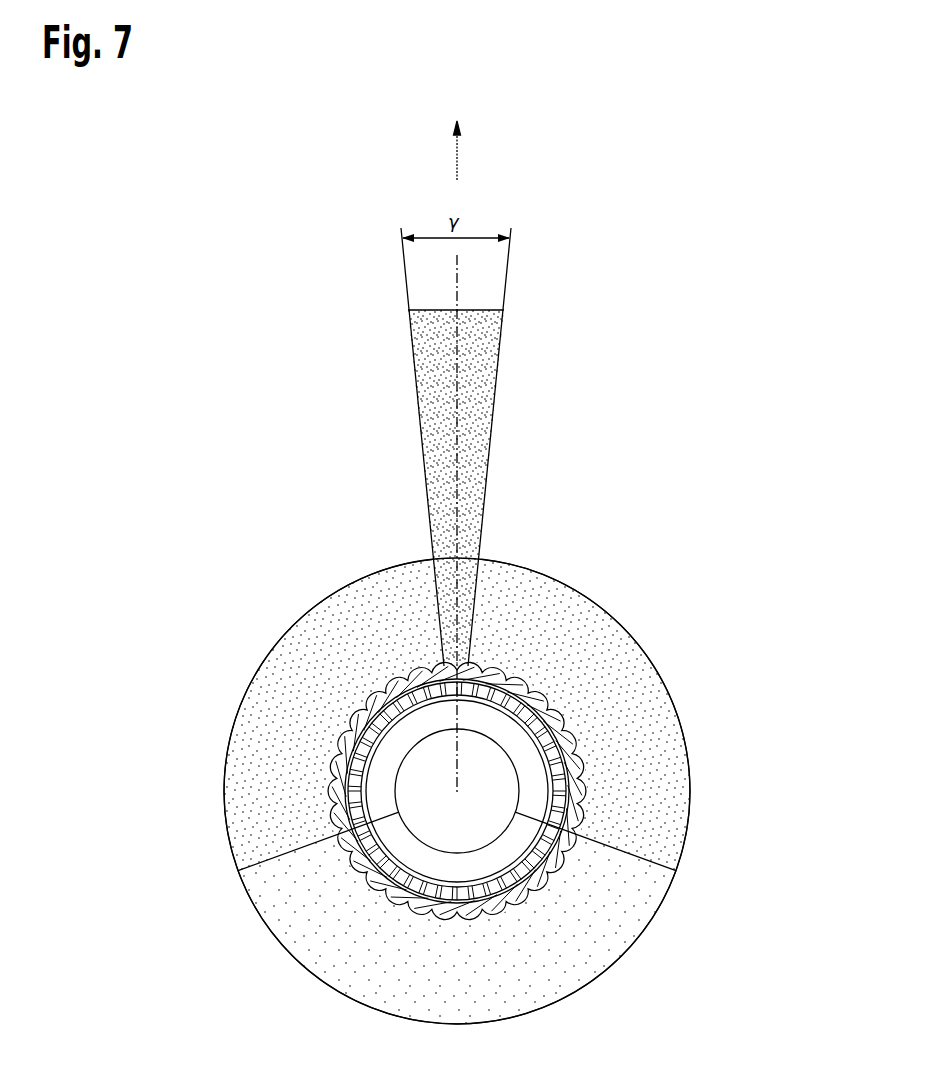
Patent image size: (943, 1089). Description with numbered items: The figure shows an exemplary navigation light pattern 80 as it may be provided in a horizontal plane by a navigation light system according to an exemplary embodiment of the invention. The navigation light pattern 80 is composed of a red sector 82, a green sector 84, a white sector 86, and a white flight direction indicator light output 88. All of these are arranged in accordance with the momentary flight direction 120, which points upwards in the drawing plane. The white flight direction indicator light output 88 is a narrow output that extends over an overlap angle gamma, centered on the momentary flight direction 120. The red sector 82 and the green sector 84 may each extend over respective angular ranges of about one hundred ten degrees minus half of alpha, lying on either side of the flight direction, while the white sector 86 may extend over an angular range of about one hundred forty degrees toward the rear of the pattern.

The navigation light pattern 80 is at (725, 435).
The red sector 82 is at (266, 719).
The green sector 84 is at (631, 676).
The white sector 86 is at (330, 950).
The white flight direction indicator light output 88 is at (394, 398).
The momentary flight direction 120 is at (459, 149).